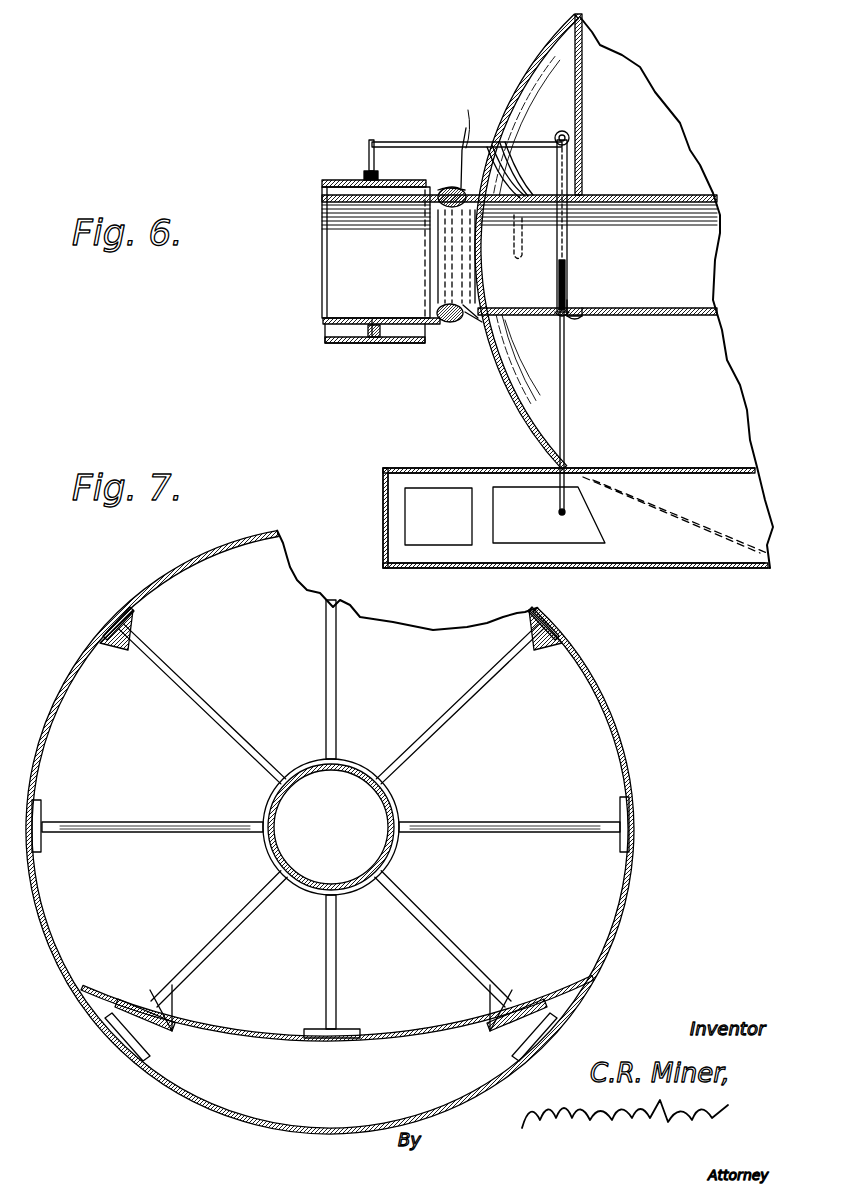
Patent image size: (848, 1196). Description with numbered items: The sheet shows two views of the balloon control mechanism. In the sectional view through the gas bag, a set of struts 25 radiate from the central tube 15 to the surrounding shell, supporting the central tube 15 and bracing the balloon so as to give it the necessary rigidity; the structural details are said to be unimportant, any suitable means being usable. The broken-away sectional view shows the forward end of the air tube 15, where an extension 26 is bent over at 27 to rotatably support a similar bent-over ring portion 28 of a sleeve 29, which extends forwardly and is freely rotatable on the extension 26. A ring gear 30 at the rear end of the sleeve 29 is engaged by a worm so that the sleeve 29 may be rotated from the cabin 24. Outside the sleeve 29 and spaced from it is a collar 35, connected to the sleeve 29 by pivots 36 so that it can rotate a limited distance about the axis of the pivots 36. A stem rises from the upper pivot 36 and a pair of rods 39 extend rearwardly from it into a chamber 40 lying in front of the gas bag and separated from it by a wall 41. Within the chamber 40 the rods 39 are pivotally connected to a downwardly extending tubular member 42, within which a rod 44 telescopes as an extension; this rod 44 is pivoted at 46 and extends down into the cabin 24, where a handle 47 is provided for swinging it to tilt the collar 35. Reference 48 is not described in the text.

In FIG. 6, the central tube 15 is at (619, 195).
In FIG. 7, the central tube 15 is at (331, 827).
In FIG. 6, the cabin 24 is at (480, 556).
In FIG. 7, the cabin 24 is at (312, 1116).
In FIG. 7, the struts 25 is at (474, 825).
In FIG. 6, the extension 26 is at (473, 325).
In FIG. 7, the extension 26 is at (322, 645).
In FIG. 6, the bent-over portion 27 is at (447, 189).
In FIG. 6, the bent-over ring portion 28 is at (463, 148).
In FIG. 6, the sleeve 29 is at (350, 332).
In FIG. 6, the ring gear 30 is at (455, 325).
In FIG. 6, the collar 35 is at (336, 182).
In FIG. 6, the pivots 36 is at (352, 176).
In FIG. 6, the rods 39 is at (394, 140).
In FIG. 6, the chamber 40 is at (512, 98).
In FIG. 6, the wall 41 is at (584, 72).
In FIG. 6, the tubular member 42 is at (567, 152).
In FIG. 6, the rod 44 is at (568, 292).
In FIG. 6, the pivot 46 is at (576, 318).
In FIG. 6, the handles 47 is at (560, 503).
In FIG. 6, the cables 48 is at (513, 180).